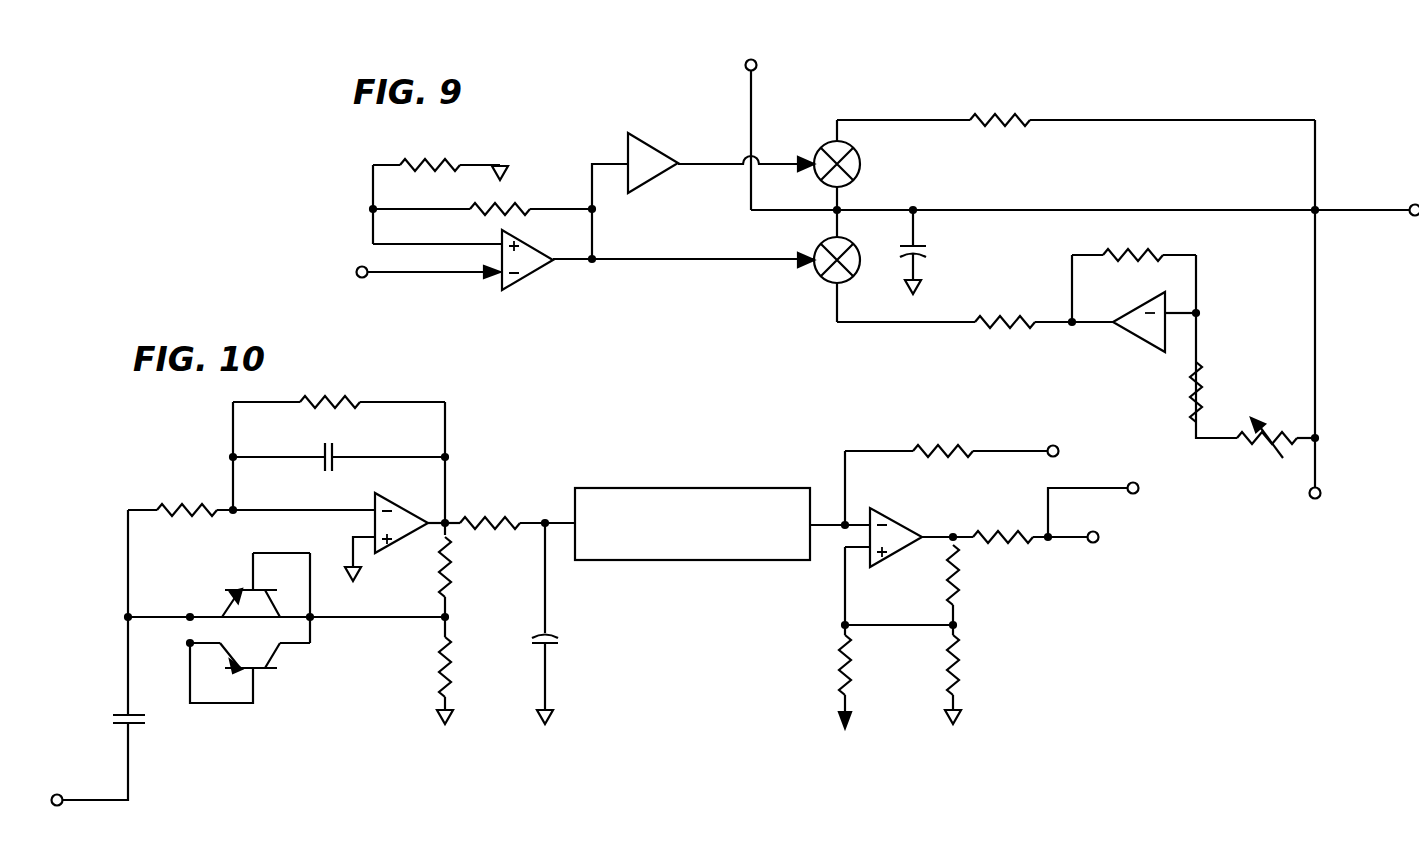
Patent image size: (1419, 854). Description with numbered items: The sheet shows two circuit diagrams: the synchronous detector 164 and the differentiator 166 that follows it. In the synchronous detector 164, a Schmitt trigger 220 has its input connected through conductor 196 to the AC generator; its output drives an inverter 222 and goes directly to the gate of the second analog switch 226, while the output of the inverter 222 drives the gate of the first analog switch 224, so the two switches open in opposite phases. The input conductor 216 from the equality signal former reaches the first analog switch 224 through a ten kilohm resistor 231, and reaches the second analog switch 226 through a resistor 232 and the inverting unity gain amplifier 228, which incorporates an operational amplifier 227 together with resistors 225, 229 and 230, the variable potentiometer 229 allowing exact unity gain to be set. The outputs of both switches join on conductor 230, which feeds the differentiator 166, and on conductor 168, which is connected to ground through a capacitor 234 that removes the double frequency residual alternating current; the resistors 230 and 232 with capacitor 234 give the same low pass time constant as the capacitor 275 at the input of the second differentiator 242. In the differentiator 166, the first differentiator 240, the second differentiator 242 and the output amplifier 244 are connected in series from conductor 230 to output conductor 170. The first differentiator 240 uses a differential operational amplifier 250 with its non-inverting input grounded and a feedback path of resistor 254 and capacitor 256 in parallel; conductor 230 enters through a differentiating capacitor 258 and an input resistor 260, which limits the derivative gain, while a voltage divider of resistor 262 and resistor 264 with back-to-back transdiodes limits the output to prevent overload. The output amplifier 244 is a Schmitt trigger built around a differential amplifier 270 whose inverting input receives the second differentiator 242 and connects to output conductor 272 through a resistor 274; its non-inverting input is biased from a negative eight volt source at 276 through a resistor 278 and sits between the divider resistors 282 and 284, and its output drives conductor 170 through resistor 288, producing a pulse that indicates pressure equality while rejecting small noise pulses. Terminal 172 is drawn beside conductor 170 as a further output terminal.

In FIG. 9, the synchronous detector 164 is at (1146, 88).
In FIG. 10, the differentiator 166 is at (652, 759).
In FIG. 9, the conductor 168 is at (1362, 210).
In FIG. 10, the output conductor 170 is at (1075, 537).
In FIG. 10, the output terminal 172 is at (1094, 488).
In FIG. 9, the conductor 196 is at (436, 275).
In FIG. 9, the input conductor 216 is at (1318, 472).
In FIG. 9, the Schmitt trigger 220 is at (533, 269).
In FIG. 9, the inverter 222 is at (652, 152).
In FIG. 9, the first analog switch 224 is at (860, 168).
In FIG. 9, the resistor 225 is at (1132, 254).
In FIG. 9, the second analog switch 226 is at (822, 283).
In FIG. 9, the operational amplifier 227 is at (1152, 338).
In FIG. 9, the unity gain amplifier 228 is at (1056, 297).
In FIG. 9, the variable potentiometer 229 is at (1258, 447).
In FIG. 9, the output conductor 230 is at (752, 97).
In FIG. 10, the output conductor 230 is at (93, 800).
In FIG. 9, the resistor 231 is at (990, 118).
In FIG. 9, the resistor 232 is at (1000, 328).
In FIG. 9, the capacitor 234 is at (925, 247).
In FIG. 10, the first differentiator 240 is at (352, 700).
In FIG. 10, the second differentiator 242 is at (734, 558).
In FIG. 10, the output amplifier 244 is at (888, 424).
In FIG. 10, the differential operational amplifier 250 is at (375, 522).
In FIG. 10, the resistor 254 is at (330, 400).
In FIG. 10, the capacitor 256 is at (324, 443).
In FIG. 10, the differentiating capacitor 258 is at (118, 713).
In FIG. 10, the input resistor 260 is at (185, 498).
In FIG. 10, the resistor 262 is at (177, 687).
In FIG. 10, the resistor 264 is at (440, 655).
In FIG. 10, the differential amplifier 270 is at (905, 529).
In FIG. 10, the output conductor 272 is at (1010, 451).
In FIG. 10, the resistor 274 is at (937, 455).
In FIG. 10, the capacitor 275 is at (555, 636).
In FIG. 10, the source of negative 8 volts 276 is at (502, 516).
In FIG. 10, the resistor 278 is at (837, 672).
In FIG. 10, the resistor 282 is at (960, 580).
In FIG. 10, the resistor 284 is at (960, 691).
In FIG. 10, the resistor 288 is at (1030, 544).